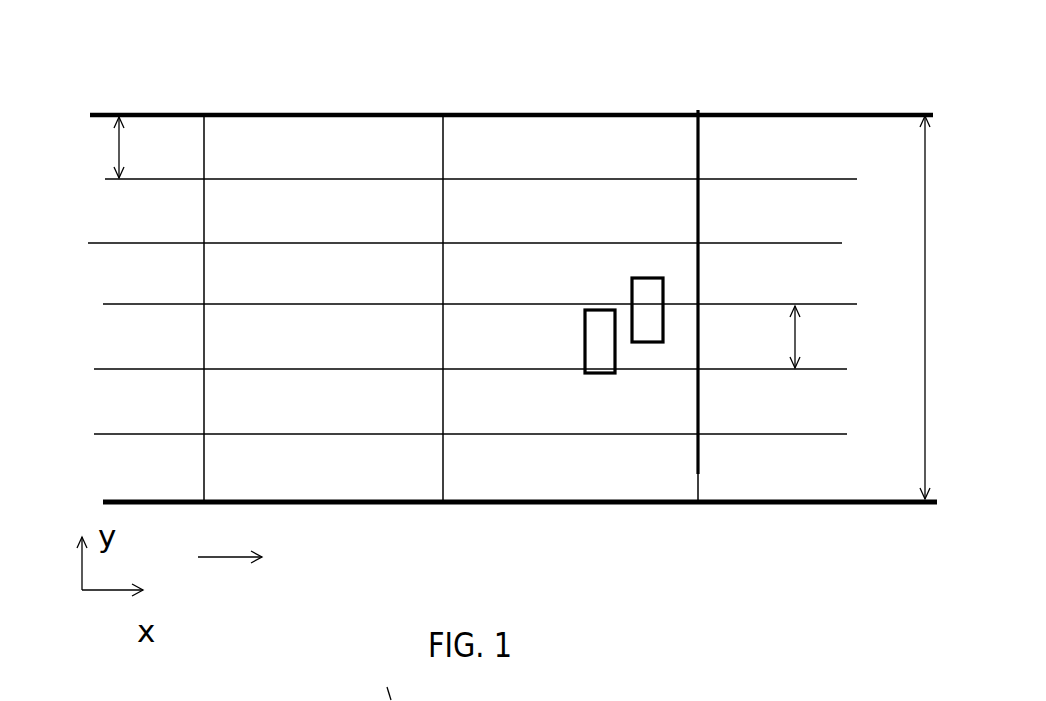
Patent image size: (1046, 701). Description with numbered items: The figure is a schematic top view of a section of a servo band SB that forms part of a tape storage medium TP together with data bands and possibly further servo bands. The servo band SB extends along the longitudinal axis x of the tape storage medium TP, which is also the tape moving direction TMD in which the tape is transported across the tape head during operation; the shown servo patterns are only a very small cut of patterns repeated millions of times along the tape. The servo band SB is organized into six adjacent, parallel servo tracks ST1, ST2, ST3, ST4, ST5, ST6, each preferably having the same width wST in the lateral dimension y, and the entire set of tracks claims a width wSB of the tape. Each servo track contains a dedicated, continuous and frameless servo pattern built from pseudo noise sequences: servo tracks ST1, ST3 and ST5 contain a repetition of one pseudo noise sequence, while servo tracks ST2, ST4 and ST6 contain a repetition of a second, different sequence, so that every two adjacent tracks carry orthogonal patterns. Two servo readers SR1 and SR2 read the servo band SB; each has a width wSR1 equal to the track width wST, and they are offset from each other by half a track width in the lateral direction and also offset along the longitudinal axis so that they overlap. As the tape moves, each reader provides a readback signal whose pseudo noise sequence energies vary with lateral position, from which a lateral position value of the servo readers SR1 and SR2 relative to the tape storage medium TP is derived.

The tape storage medium TP is at (327, 78).
The servo band SB is at (418, 505).
The first servo reader SR1 is at (600, 373).
The second servo reader SR2 is at (648, 342).
The tape moving direction TMD is at (252, 539).
The width of servo track wST is at (88, 147).
The width of servo band wSB is at (892, 307).
The width of first servo reader wSR1 is at (838, 337).
The first servo track ST1 is at (481, 147).
The second servo track ST2 is at (481, 211).
The third servo track ST3 is at (482, 273).
The fourth servo track ST4 is at (482, 336).
The fifth servo track ST5 is at (483, 401).
The sixth servo track ST6 is at (483, 468).